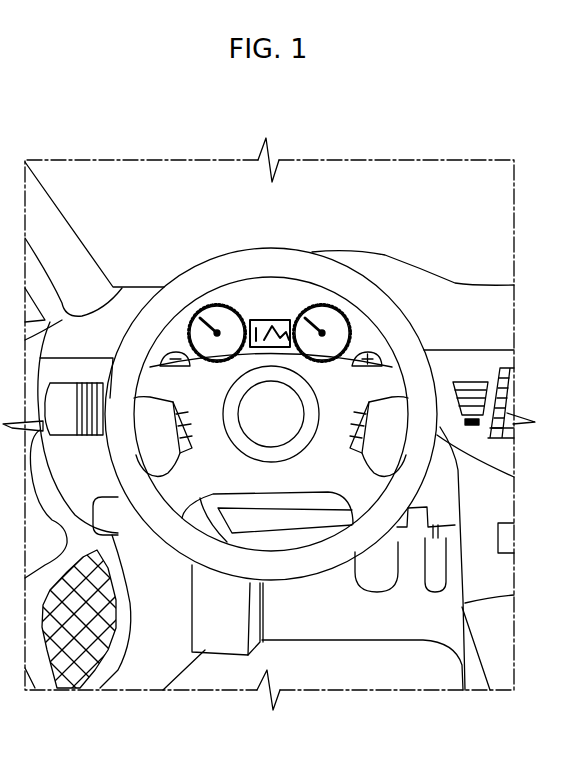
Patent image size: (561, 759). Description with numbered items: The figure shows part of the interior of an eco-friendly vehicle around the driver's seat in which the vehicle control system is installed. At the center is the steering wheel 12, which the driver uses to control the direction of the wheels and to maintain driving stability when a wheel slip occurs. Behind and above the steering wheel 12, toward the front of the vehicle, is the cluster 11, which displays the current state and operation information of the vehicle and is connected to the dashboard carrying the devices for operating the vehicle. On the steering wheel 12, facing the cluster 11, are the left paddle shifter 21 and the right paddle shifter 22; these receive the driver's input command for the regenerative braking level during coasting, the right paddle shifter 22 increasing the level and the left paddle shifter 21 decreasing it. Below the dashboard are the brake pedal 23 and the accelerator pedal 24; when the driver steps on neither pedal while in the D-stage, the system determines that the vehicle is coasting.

The cluster 11 is at (237, 300).
The steering wheel 12 is at (270, 260).
The left paddle shifter 21 is at (173, 352).
The right paddle shifter 22 is at (367, 350).
The brake pedal 23 is at (377, 592).
The accelerator pedal 24 is at (435, 592).